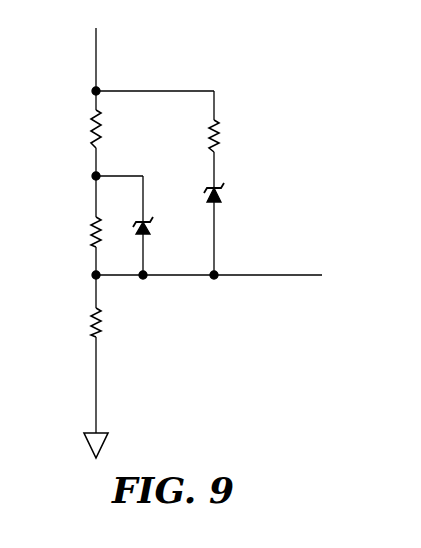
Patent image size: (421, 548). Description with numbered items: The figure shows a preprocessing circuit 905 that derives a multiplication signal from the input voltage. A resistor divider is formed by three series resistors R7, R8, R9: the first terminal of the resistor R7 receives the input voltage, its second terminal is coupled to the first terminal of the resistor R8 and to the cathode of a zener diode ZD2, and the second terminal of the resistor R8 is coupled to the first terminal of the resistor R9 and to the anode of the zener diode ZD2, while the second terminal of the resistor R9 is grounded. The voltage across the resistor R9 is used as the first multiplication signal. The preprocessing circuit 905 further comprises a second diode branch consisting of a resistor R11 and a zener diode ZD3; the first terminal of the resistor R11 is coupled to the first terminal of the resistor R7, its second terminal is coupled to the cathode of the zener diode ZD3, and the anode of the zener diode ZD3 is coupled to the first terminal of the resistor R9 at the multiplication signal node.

The preprocessing circuit 905 is at (192, 232).
The resistor R7 is at (81, 129).
The resistor R8 is at (81, 232).
The resistor R9 is at (81, 322).
The resistor R11 is at (233, 136).
The zener diode ZD2 is at (161, 229).
The zener diode ZD3 is at (232, 196).